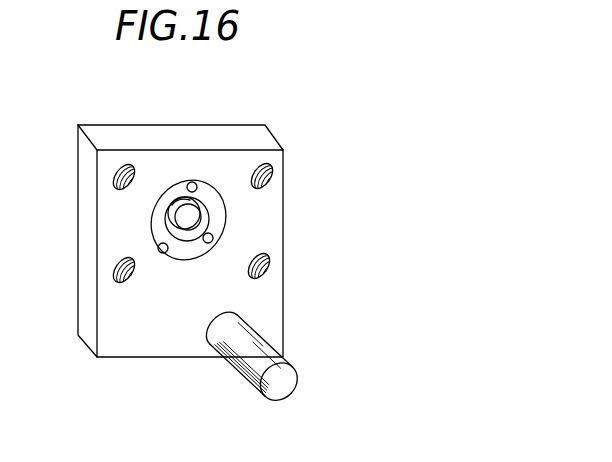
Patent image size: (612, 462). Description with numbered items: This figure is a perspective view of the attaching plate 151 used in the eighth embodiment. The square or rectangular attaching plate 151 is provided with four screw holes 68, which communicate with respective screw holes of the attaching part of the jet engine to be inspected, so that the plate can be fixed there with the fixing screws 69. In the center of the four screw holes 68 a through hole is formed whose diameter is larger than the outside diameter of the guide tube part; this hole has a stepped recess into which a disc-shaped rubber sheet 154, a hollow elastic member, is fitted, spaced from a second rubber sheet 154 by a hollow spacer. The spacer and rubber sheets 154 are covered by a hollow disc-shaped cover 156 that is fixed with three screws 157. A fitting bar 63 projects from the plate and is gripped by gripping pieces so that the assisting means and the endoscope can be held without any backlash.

The attaching plate 151 is at (142, 138).
The screw holes 68 is at (111, 180).
The cover 156 is at (222, 227).
The rubber sheet 154 is at (187, 233).
The screws 157 is at (197, 182).
The fixing screws 69 is at (179, 177).
The fitting bar 63 is at (238, 369).